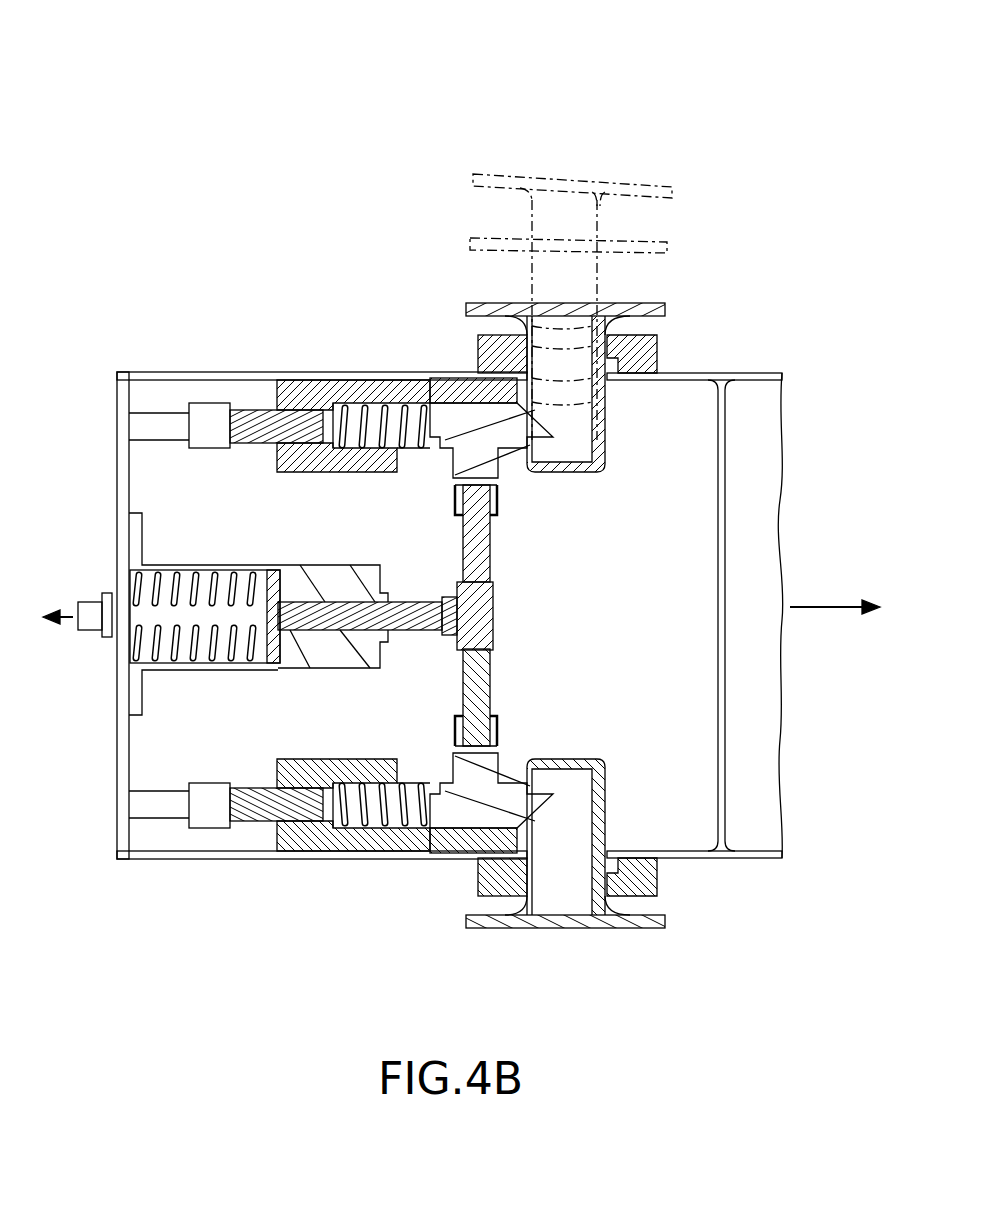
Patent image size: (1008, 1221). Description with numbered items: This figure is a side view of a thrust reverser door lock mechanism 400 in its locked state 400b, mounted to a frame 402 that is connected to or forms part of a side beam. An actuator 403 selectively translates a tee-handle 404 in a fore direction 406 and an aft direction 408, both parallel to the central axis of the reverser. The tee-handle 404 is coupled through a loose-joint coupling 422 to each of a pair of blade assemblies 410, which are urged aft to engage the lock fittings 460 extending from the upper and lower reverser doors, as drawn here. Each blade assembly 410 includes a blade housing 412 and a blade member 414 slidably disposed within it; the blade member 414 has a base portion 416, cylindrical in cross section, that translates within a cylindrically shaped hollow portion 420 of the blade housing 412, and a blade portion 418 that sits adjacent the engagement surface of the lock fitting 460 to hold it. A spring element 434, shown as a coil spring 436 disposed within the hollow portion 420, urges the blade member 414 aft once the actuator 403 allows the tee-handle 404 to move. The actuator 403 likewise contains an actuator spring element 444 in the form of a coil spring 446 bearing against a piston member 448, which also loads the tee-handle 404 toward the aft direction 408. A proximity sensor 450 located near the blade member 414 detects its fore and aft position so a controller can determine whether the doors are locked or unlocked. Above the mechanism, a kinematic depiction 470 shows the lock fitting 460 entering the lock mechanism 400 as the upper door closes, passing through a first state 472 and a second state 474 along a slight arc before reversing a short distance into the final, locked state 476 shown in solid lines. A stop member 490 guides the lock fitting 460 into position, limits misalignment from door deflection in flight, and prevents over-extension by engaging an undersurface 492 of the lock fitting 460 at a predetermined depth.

The lock mechanism 400 is at (188, 92).
The locked state 400b is at (352, 100).
The frame 402 is at (772, 860).
The actuator 403 is at (135, 546).
The tee-handle 404 is at (495, 607).
The fore direction 406 is at (73, 620).
The aft direction 408 is at (835, 606).
The blade assembly 410 is at (296, 352).
The blade housing 412 is at (330, 392).
The blade member 414 is at (450, 420).
The base portion 416 is at (452, 440).
The blade portion 418 is at (540, 432).
The cylindrically shaped hollow portion 420 is at (372, 408).
The loose-joint coupling 422 is at (450, 505).
The spring element 434 is at (352, 437).
The coil spring 436 is at (383, 440).
The actuator spring element 444 is at (180, 652).
The coil spring 446 is at (203, 650).
The piston member 448 is at (272, 656).
The proximity sensor 450 is at (245, 430).
The lock fitting 460 is at (665, 309).
The kinematic depiction 470 is at (563, 266).
The first state 472 is at (480, 178).
The second state 474 is at (478, 241).
The final, locked state 476 is at (466, 305).
The stop member 490 is at (657, 355).
The undersurface 492 is at (660, 318).